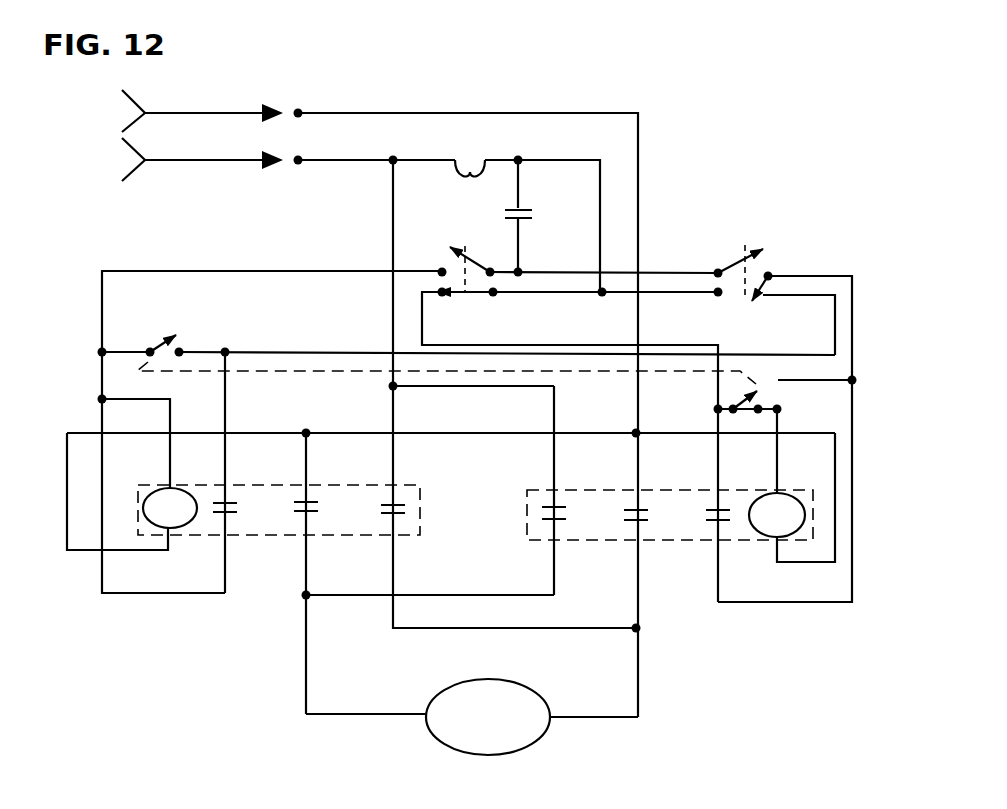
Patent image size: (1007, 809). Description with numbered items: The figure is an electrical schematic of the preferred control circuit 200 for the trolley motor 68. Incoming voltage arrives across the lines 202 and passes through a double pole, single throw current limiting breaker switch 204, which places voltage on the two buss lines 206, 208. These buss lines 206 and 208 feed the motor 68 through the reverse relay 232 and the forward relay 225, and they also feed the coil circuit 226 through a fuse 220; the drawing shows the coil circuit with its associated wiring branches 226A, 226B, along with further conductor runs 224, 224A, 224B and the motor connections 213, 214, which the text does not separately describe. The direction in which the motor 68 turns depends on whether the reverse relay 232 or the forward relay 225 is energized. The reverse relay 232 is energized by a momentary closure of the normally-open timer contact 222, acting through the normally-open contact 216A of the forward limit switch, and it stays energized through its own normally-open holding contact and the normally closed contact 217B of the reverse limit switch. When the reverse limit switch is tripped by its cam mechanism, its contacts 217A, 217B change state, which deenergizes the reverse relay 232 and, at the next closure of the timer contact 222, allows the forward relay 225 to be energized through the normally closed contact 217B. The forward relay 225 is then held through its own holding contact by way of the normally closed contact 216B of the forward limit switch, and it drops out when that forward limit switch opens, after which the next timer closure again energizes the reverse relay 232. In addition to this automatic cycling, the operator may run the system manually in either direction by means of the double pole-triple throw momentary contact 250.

The motor 68 is at (525, 683).
The electrical control circuit 200 is at (758, 232).
The lines 202 is at (195, 113).
The current limiting breaker switch 204 is at (293, 138).
The buss line 206 is at (393, 220).
The buss line 208 is at (527, 113).
The motor line 213 is at (637, 609).
The motor line 214 is at (306, 637).
The normally-open contact of forward limit switch 216A is at (764, 260).
The normally closed contact of forward limit switch 216B is at (785, 277).
The reverse limit switch contact 217A is at (438, 257).
The normally closed contact of reverse limit switch 217B is at (432, 282).
The fuse 220 is at (462, 165).
The timer contact 222 is at (512, 208).
The switch pole 224 is at (708, 240).
The switch line 224A is at (855, 313).
The switch line 224B is at (160, 270).
The forward relay 225 is at (190, 488).
The coil circuit 226 is at (684, 293).
The switch line 226A is at (750, 357).
The switch line 226B is at (560, 345).
The reverse relay 232 is at (771, 490).
The momentary contact 250 is at (184, 335).